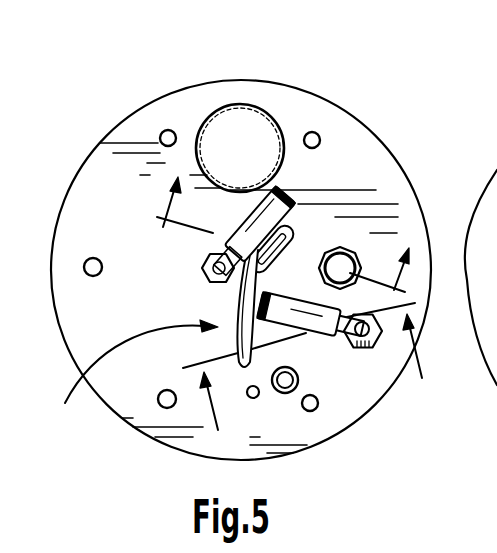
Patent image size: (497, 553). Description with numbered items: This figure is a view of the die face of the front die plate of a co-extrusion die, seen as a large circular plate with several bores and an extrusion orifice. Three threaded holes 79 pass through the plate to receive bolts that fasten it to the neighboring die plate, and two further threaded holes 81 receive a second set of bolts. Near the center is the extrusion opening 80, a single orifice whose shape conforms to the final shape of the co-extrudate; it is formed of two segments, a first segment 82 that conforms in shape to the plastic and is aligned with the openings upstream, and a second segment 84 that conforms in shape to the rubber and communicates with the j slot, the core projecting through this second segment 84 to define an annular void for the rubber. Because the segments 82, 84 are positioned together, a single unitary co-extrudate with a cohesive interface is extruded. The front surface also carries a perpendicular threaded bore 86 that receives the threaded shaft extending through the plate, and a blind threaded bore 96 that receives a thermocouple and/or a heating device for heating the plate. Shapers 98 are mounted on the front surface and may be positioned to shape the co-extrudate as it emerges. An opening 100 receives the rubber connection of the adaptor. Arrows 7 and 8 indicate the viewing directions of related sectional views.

The section view direction arrow (FIG. 7) 7 is at (287, 222).
The section view direction arrow (FIG. 8) 8 is at (308, 379).
The threaded holes 79 is at (84, 262).
The extrusion opening 80 is at (133, 375).
The threaded holes 81 is at (313, 130).
The first segment 82 is at (333, 340).
The second segment 84 is at (298, 246).
The threaded bore 86 is at (350, 247).
The blind threaded bore 96 is at (283, 394).
The shapers 98 is at (295, 198).
The opening 100 is at (239, 104).